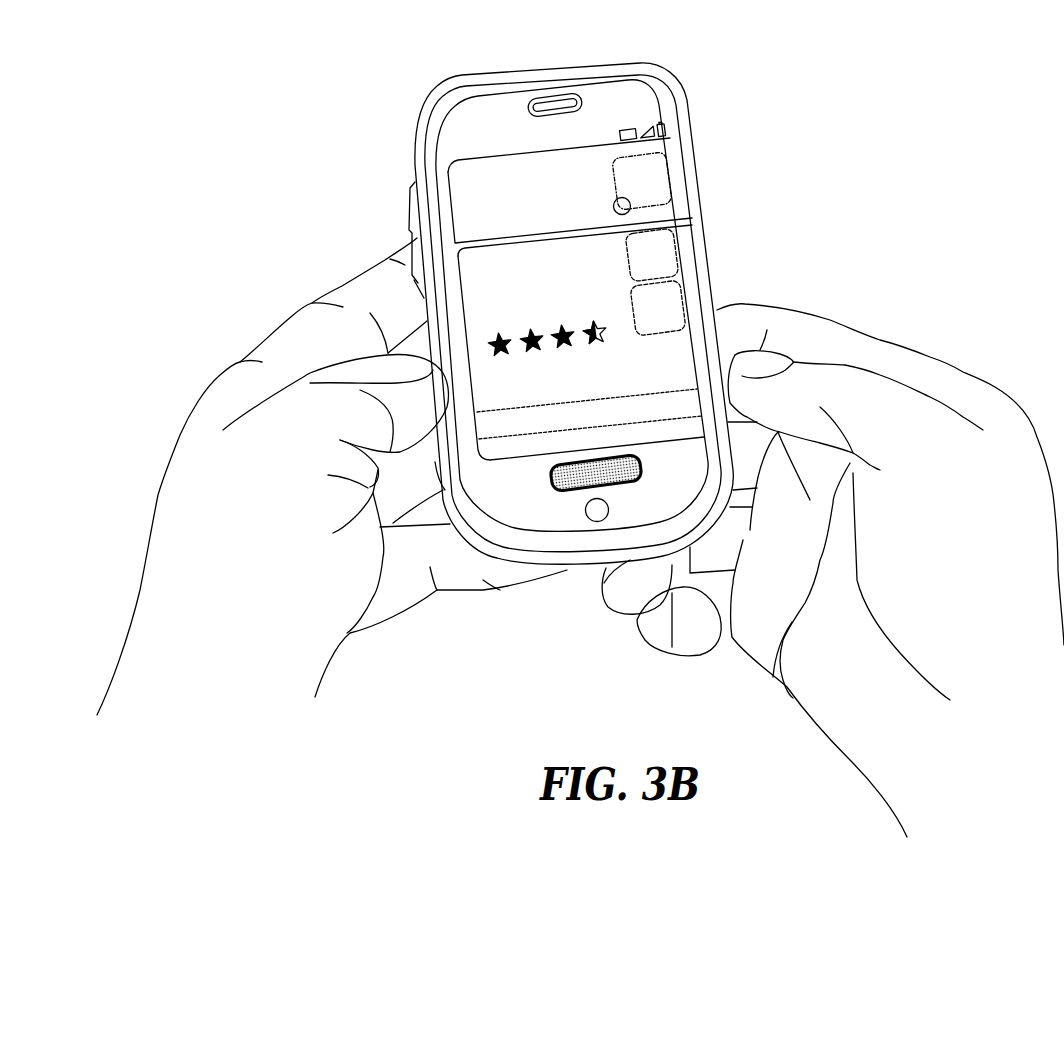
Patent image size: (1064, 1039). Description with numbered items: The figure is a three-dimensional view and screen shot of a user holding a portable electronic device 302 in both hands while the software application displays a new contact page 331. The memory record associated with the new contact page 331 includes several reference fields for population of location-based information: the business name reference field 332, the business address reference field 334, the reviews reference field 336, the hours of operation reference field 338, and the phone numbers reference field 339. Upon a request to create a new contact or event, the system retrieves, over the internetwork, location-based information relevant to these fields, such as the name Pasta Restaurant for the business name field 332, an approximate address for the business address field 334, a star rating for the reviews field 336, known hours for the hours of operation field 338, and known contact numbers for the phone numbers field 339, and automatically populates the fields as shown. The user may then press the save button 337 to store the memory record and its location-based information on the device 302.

The portable electronic device 302 is at (593, 63).
The new contact page 331 is at (445, 196).
The business name reference field 332 is at (496, 172).
The business address reference field 334 is at (530, 251).
The reviews reference field 336 is at (532, 318).
The hours of operation reference field 338 is at (528, 376).
The phone numbers reference field 339 is at (694, 430).
The save button 337 is at (557, 492).